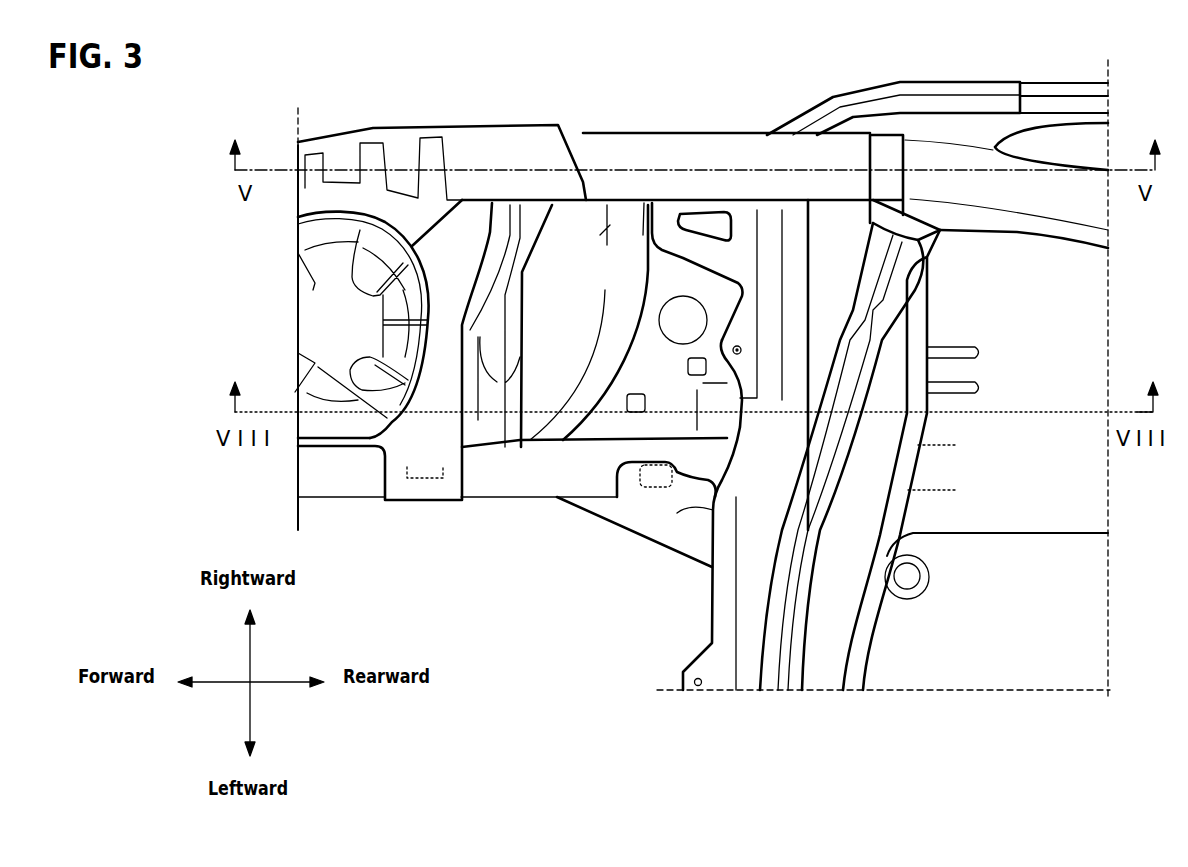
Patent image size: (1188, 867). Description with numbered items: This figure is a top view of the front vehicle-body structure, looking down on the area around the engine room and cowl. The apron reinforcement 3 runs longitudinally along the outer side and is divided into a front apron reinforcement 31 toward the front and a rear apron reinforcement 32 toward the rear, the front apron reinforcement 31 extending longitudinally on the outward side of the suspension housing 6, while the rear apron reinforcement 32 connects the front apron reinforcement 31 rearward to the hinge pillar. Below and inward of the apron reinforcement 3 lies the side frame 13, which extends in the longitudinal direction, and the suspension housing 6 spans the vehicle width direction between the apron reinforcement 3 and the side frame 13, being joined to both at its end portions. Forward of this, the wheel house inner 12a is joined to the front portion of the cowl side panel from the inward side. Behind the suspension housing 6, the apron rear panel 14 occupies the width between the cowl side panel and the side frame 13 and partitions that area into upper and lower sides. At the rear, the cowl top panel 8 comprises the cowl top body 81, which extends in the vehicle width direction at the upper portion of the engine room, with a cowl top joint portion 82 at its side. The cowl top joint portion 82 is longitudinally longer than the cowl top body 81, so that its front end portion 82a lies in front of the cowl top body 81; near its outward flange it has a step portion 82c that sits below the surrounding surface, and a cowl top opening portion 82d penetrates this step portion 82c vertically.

The apron reinforcement 3 is at (703, 136).
The front apron reinforcement 31 is at (477, 130).
The rear apron reinforcement 32 is at (807, 150).
The cowl top joint portion 82 is at (787, 215).
The front end portion 82a is at (670, 197).
The step portion 82c is at (637, 267).
The cowl top opening portion 82d is at (697, 217).
The wheel house inner 12a is at (585, 381).
The apron rear panel 14 is at (678, 384).
The side frame 13 is at (513, 483).
The suspension housing 6 is at (333, 320).
The cowl top panel 8 is at (718, 608).
The cowl top body 81 is at (760, 510).